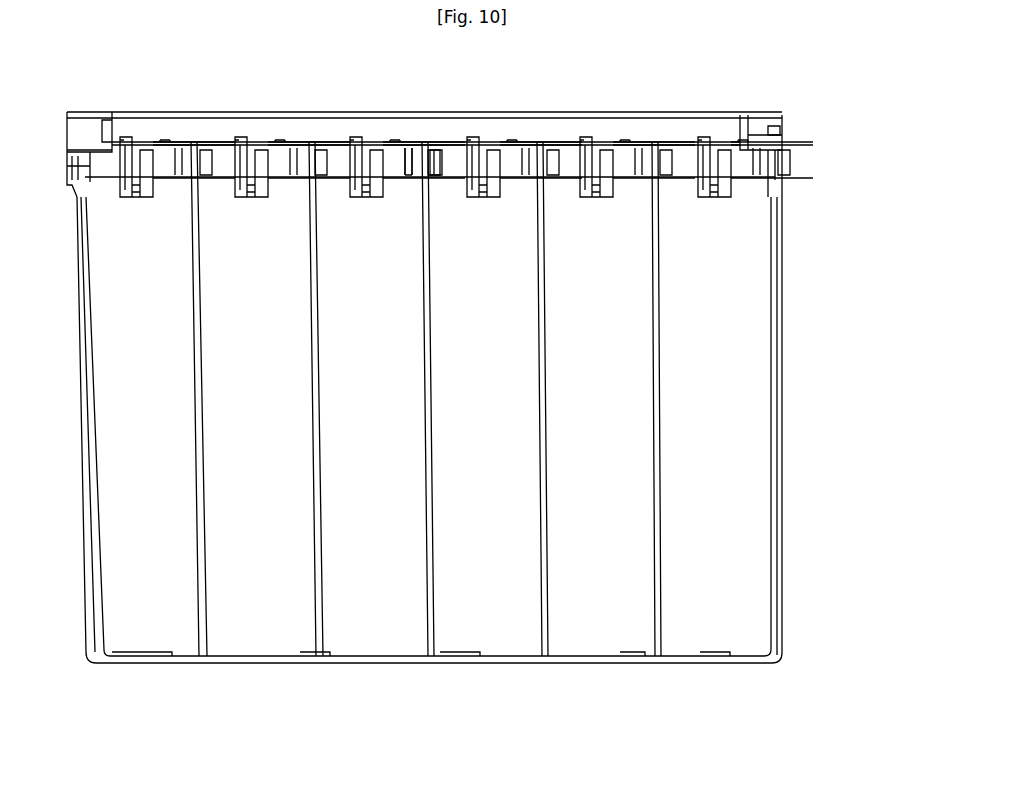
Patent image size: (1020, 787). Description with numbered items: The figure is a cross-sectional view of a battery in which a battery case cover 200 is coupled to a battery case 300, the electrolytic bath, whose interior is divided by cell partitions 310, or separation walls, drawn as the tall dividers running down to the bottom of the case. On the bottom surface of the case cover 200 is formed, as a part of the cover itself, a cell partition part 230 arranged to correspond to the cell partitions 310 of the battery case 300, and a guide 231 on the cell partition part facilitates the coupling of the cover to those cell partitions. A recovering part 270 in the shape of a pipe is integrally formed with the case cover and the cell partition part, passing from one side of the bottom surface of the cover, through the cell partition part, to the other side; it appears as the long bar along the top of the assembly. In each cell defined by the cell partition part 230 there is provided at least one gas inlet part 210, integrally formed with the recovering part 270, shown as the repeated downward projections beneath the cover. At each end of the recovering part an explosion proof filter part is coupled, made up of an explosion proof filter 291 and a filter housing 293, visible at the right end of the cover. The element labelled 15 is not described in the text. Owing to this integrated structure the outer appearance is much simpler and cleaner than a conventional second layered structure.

The hanger block 15 is at (216, 136).
The battery case cover 200 is at (342, 135).
The gas inlet part 210 is at (357, 197).
The cell partition part 230 is at (414, 140).
The guide 231 is at (440, 150).
The recovering part 270 is at (626, 130).
The explosion proof filter 291 is at (740, 128).
The filter housing 293 is at (768, 136).
The battery case 300 is at (778, 456).
The cell partitions 310 is at (660, 540).